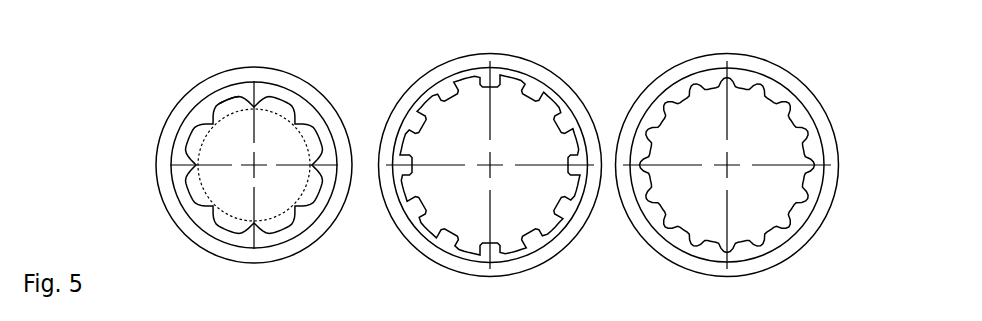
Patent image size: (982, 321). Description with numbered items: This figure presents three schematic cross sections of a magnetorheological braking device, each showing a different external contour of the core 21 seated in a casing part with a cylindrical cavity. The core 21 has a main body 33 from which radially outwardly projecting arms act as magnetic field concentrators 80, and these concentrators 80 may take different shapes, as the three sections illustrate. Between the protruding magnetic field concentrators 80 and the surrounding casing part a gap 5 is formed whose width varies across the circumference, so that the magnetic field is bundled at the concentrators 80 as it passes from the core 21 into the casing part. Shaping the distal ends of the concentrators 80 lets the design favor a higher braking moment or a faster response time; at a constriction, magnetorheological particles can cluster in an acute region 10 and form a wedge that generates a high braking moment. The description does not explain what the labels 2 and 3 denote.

The shaft 2 is at (260, 193).
The housing sleeve 3 is at (497, 176).
The gap 5 is at (205, 218).
The acute region 10 is at (264, 85).
The core 21 is at (213, 100).
The main body 33 is at (200, 143).
The magnetic field concentrators 80 is at (530, 178).